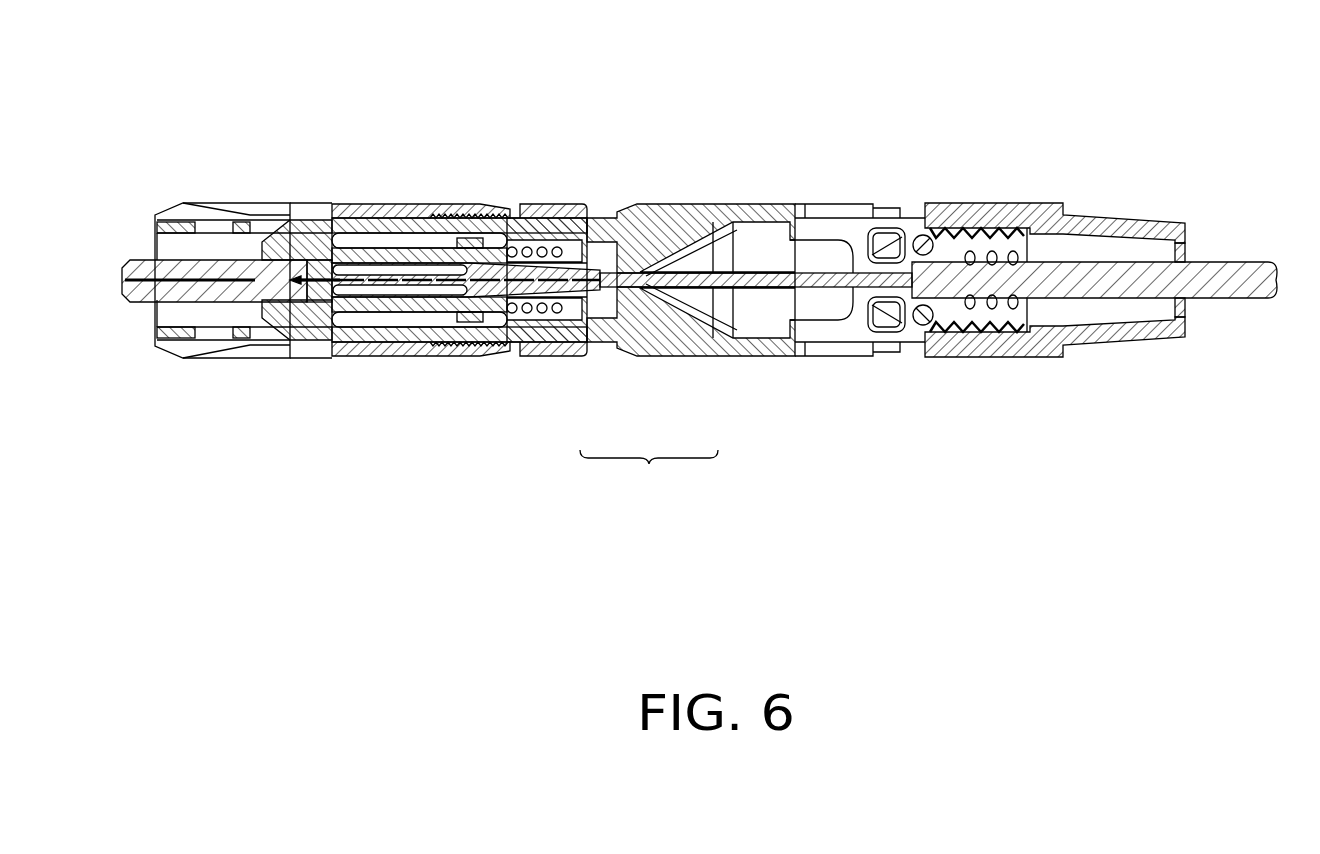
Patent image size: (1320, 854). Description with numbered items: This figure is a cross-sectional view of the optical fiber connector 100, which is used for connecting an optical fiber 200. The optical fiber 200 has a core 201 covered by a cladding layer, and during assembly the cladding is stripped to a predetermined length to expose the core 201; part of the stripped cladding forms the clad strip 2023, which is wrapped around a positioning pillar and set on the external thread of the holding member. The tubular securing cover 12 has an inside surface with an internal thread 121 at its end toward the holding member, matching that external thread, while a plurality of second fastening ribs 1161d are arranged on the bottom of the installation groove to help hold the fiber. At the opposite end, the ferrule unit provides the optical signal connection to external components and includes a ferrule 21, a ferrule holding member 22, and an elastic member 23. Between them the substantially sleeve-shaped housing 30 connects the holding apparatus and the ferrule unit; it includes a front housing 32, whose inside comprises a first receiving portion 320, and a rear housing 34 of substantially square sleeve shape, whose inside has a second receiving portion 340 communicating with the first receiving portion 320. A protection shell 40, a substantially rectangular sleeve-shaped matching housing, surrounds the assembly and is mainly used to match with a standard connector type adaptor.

The optical fiber connector 100 is at (556, 78).
The ferrule 21 is at (212, 238).
The first receiving portion 320 is at (244, 248).
The protection shell 40 is at (373, 212).
The core 201 is at (520, 262).
The ferrule holding member 22 is at (305, 335).
The elastic member 23 is at (533, 342).
The front housing 32 is at (572, 360).
The housing 30 is at (649, 475).
The rear housing 34 is at (708, 345).
The second receiving portion 340 is at (775, 250).
The clad strip 2023 is at (910, 245).
The securing cover 12 is at (1055, 218).
The second fastening ribs 1161d is at (1025, 245).
The internal thread 121 is at (1021, 345).
The optical fiber 200 is at (1246, 278).